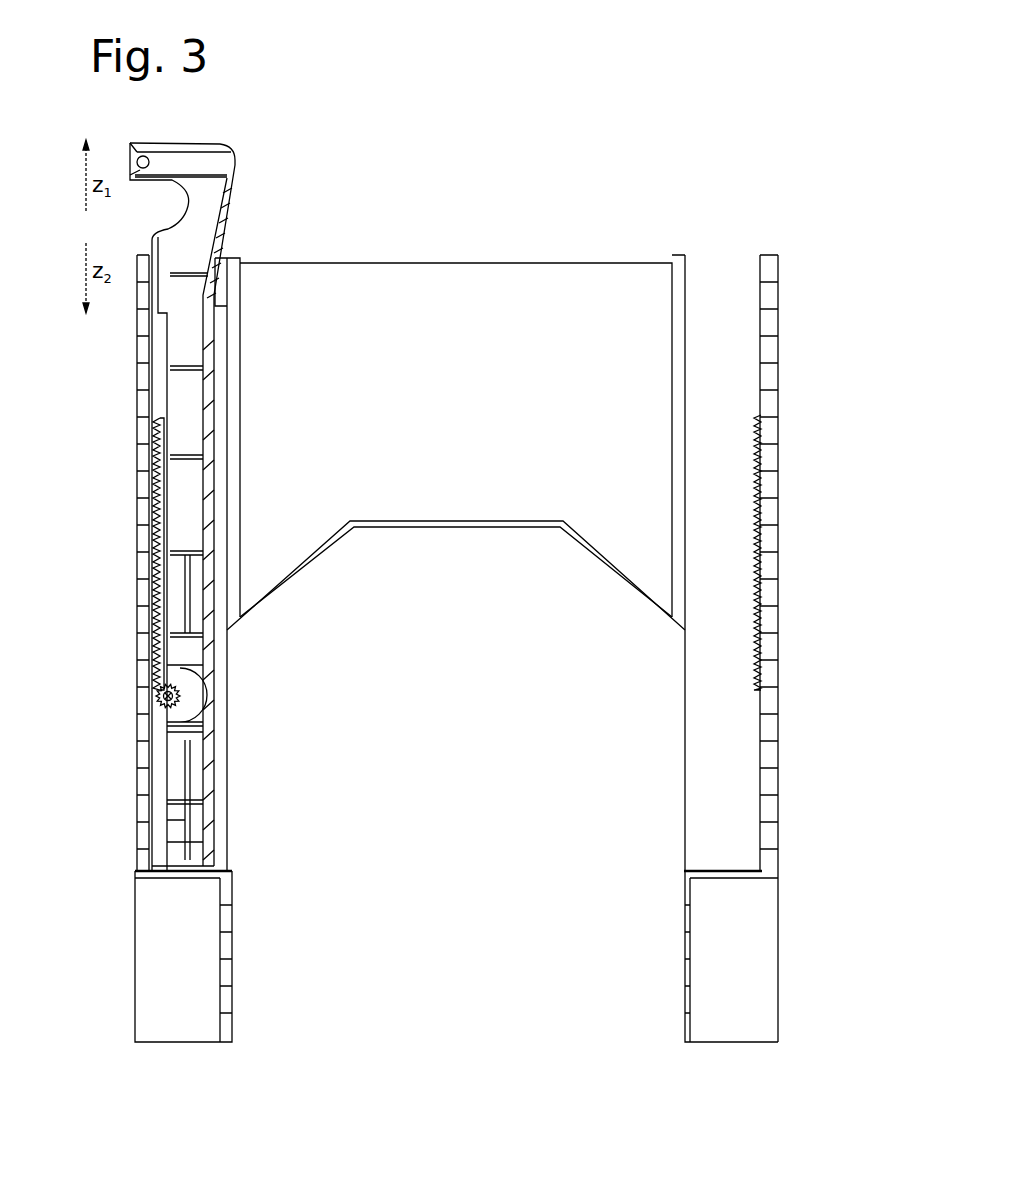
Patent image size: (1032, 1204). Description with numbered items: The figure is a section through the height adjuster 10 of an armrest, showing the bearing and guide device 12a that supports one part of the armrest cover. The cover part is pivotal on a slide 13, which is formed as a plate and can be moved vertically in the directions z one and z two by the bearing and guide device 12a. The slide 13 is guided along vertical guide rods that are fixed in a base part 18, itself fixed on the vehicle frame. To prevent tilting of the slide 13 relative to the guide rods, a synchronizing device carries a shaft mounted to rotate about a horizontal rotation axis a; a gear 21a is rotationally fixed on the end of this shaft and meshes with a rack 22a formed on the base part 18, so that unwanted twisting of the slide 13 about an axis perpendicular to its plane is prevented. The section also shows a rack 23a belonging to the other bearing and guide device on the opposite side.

The vehicle seat / seat frame 10 is at (705, 105).
The bearing and guide device 12a is at (252, 187).
The slide 13 is at (228, 224).
The base part 18 is at (145, 600).
The gear 21a is at (156, 706).
The rack 22a is at (155, 490).
The rack 23a is at (743, 532).
The rotation axis a is at (160, 690).